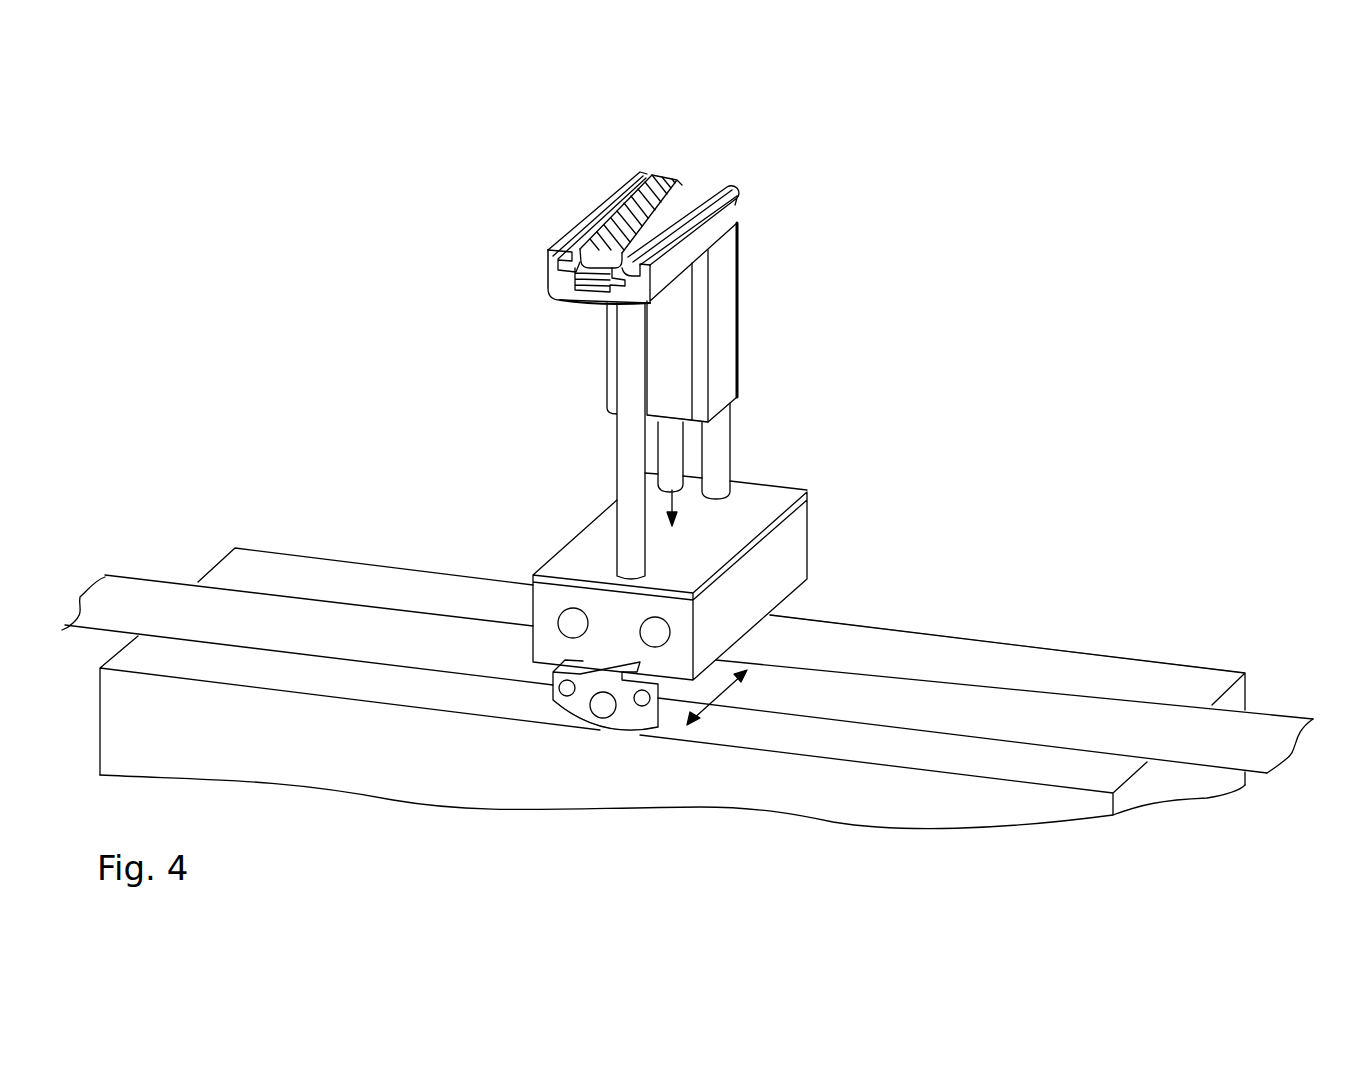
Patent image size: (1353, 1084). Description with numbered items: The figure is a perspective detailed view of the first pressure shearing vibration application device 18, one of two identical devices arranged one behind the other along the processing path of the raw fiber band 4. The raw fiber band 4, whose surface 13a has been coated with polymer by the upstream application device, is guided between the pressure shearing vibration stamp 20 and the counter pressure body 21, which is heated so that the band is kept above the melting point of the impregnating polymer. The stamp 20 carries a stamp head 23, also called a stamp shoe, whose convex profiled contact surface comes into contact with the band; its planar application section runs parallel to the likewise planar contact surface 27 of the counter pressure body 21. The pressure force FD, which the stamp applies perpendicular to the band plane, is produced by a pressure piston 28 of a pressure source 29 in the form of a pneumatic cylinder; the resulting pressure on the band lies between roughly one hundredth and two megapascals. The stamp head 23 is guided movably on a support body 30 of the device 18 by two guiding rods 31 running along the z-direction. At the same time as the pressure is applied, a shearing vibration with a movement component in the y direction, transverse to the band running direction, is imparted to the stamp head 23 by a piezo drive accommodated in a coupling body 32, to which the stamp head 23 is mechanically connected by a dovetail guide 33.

The raw fiber band 4 is at (1096, 692).
The surface of the raw fiber band 13a is at (1015, 700).
The pressure shearing vibration application device 18 is at (478, 218).
The pressure shearing vibration stamp 20 is at (803, 351).
The counter pressure body 21 is at (541, 785).
The stamp head 23 is at (635, 727).
The contact surface of the counter pressure body 27 is at (912, 647).
The pressure piston 28 is at (680, 456).
The pressure source 29 is at (748, 304).
The support body 30 is at (722, 213).
The guiding rods 31 is at (628, 447).
The coupling body 32 is at (610, 608).
The dovetail guide 33 is at (597, 675).
The pressure force FD is at (673, 502).
The y-direction y is at (695, 710).